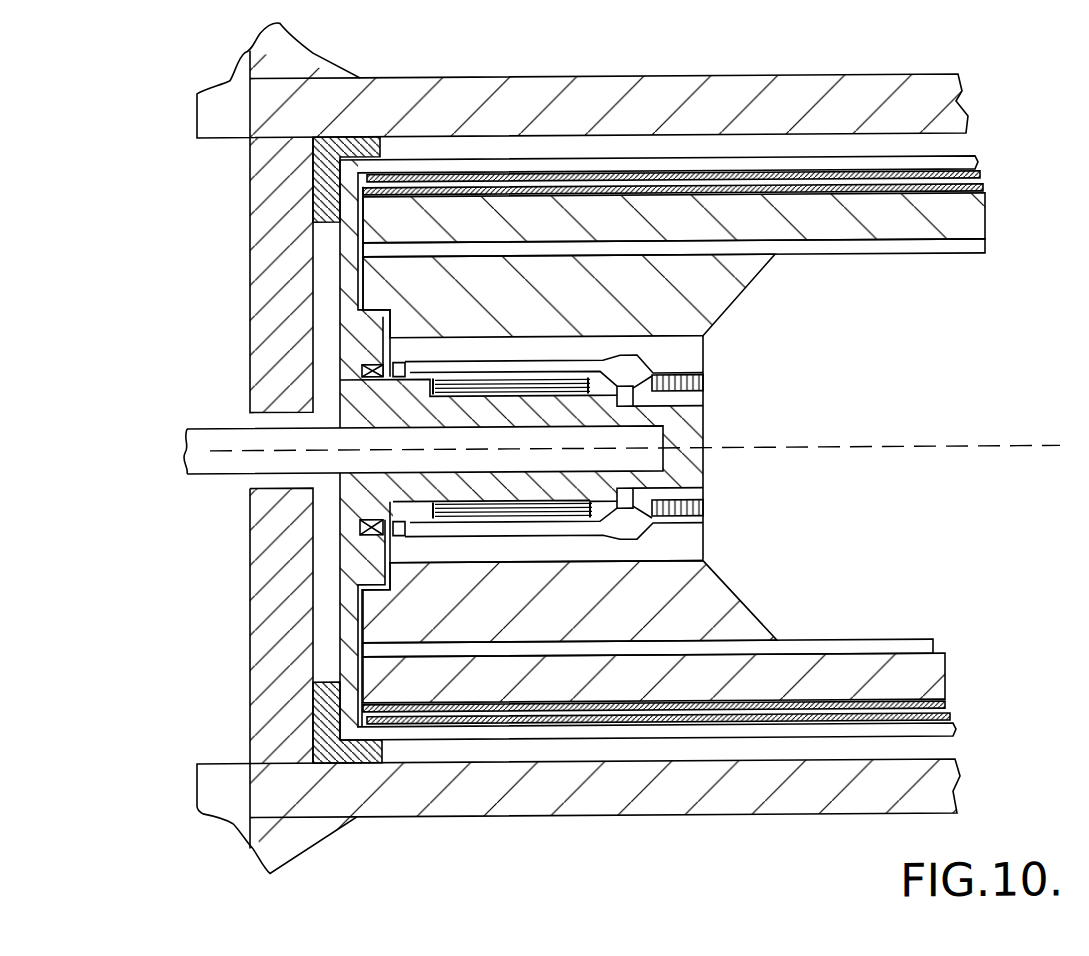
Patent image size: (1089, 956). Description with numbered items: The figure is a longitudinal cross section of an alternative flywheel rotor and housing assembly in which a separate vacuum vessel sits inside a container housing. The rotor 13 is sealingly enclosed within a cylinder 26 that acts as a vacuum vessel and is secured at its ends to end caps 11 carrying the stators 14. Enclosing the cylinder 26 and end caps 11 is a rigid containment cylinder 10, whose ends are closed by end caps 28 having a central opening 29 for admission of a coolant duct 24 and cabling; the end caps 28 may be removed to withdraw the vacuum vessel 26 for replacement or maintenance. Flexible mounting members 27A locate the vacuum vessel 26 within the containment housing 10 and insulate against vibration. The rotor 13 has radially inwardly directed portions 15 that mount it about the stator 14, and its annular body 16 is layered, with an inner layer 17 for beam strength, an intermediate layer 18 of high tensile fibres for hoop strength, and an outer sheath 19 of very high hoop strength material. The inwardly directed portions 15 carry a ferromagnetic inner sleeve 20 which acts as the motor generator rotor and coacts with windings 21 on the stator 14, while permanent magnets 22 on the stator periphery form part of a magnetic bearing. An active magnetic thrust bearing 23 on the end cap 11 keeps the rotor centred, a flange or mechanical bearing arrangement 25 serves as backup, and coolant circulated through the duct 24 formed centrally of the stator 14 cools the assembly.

The containment cylinder 10 is at (908, 105).
The end cap 11 is at (365, 335).
The rotor 13 is at (927, 274).
The stator member 14 is at (690, 415).
The radially inwardly directed portion 15 is at (708, 284).
The annular body 16 is at (828, 672).
The inner layer 17 is at (838, 248).
The intermediate layer 18 is at (937, 222).
The outer sheath 19 is at (957, 193).
The inner sleeve 20 is at (675, 546).
The windings 21 is at (517, 513).
The permanent magnet 22 is at (625, 395).
The active magnetic thrust bearing 23 is at (360, 372).
The coolant duct 24 is at (248, 462).
The mechanical bearing arrangement 25 is at (367, 575).
The cylinder 26 is at (358, 165).
The flexible mounting member 27A is at (318, 745).
The end cap 28 is at (250, 572).
The central opening 29 is at (273, 413).